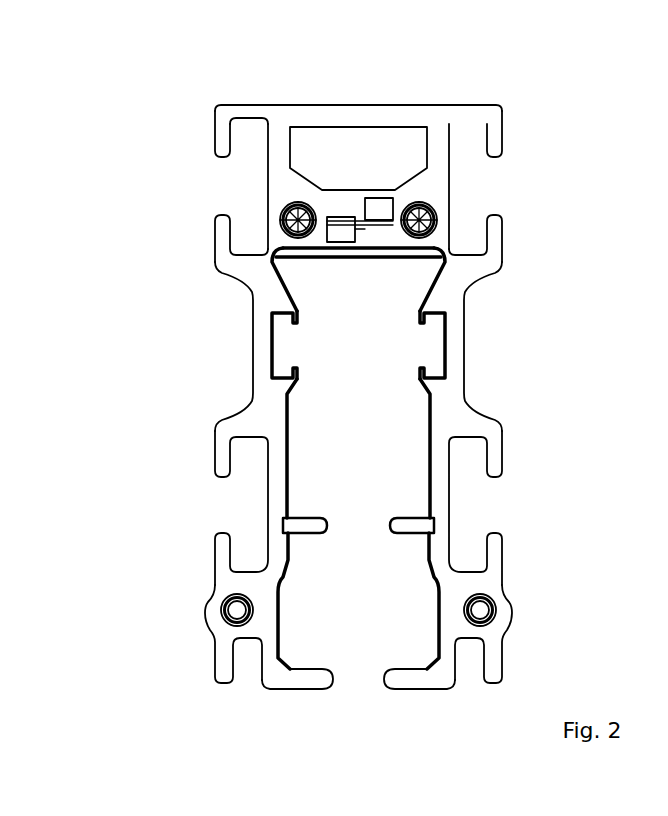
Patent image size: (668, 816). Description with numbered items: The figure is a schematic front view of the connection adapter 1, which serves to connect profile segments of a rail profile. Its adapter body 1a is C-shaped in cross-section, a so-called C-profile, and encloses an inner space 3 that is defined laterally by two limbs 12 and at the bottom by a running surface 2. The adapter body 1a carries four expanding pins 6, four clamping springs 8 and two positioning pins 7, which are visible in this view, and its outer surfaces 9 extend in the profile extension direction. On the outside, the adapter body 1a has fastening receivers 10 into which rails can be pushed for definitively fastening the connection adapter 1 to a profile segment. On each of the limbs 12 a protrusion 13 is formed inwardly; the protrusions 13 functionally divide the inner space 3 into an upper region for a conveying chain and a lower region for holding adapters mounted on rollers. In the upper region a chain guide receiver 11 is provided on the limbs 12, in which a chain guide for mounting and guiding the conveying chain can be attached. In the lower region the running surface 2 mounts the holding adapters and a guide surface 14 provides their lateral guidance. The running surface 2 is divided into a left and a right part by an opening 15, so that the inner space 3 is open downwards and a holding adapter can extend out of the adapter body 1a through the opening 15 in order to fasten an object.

The connection adapter 1 is at (163, 295).
The adapter body 1a is at (228, 116).
The running surface 2 is at (310, 672).
The inner space 3 is at (338, 496).
The expanding pin 6 is at (282, 224).
The positioning pin 7 is at (238, 609).
The clamping spring 8 is at (343, 235).
The outer surface 9 is at (444, 103).
The fastening receiver 10 is at (315, 153).
The chain guide receiver 11 is at (284, 342).
The limb 12 is at (264, 392).
The protrusion 13 is at (310, 530).
The guide surface 14 is at (430, 560).
The opening 15 is at (362, 683).